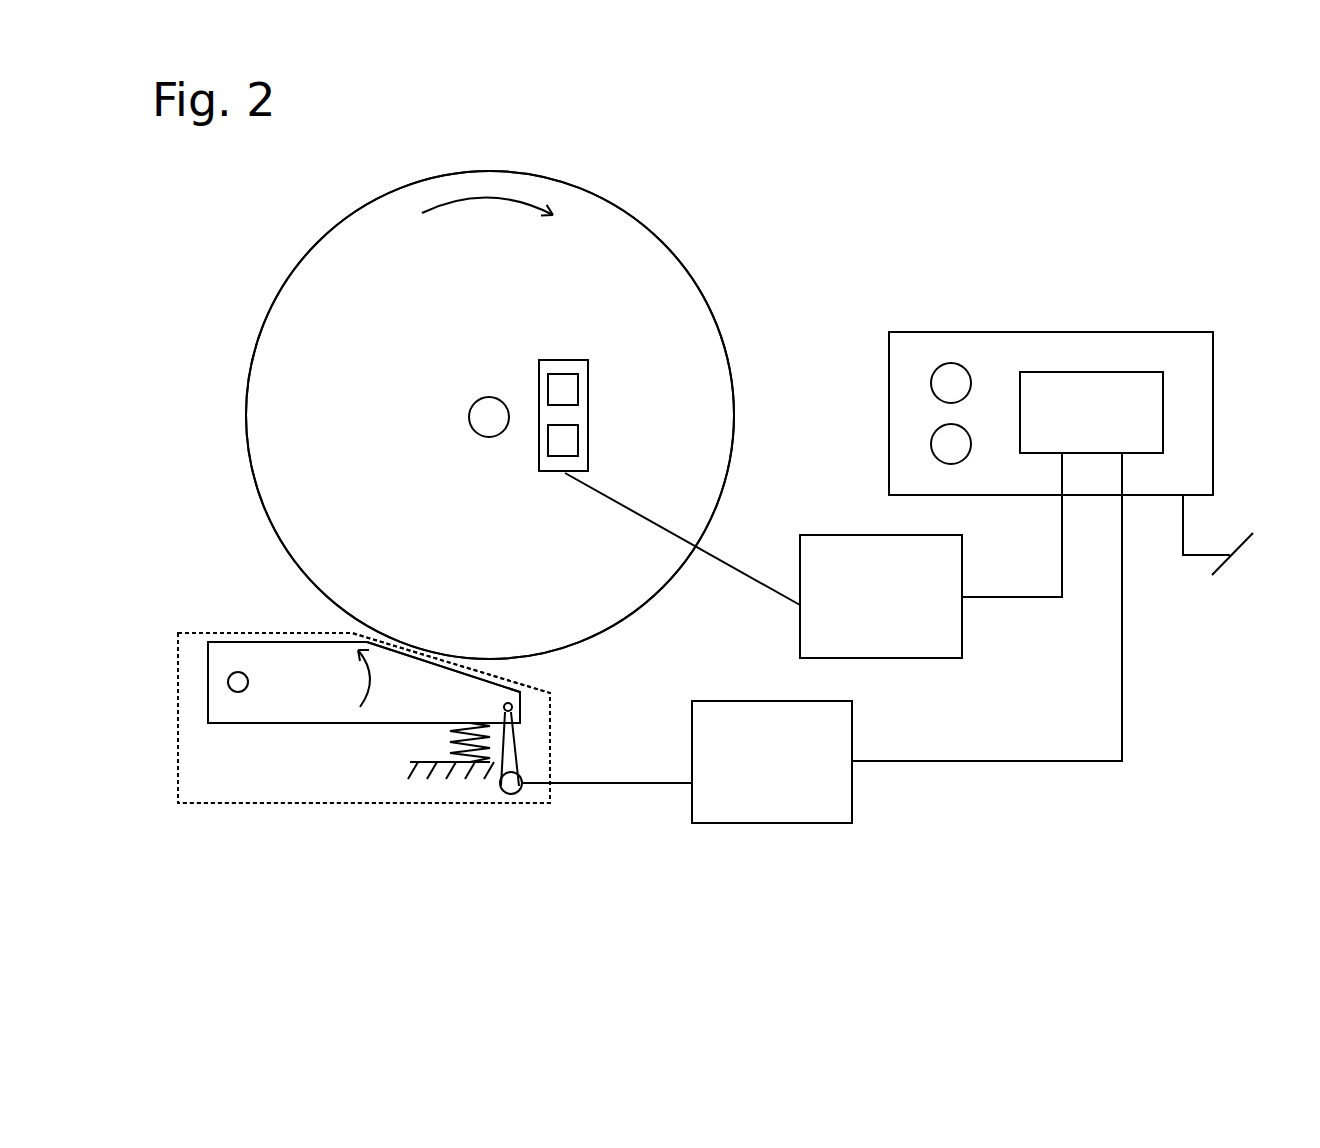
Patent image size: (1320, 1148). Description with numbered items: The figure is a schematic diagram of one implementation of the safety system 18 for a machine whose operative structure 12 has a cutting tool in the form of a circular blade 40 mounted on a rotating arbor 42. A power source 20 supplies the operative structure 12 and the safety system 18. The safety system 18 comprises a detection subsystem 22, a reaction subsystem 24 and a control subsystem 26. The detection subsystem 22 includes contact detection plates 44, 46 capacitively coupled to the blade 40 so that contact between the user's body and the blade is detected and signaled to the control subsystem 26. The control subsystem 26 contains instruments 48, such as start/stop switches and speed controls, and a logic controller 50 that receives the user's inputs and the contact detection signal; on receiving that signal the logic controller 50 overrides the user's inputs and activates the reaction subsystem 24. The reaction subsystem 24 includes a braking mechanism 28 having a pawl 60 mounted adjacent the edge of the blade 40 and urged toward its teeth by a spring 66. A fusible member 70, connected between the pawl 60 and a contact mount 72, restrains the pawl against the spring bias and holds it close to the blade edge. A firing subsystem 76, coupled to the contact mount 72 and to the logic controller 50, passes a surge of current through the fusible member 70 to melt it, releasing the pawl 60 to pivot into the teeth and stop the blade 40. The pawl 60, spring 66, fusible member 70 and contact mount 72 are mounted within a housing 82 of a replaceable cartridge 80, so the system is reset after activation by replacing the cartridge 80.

The operative structure 12 is at (716, 185).
The safety system 18 is at (1036, 223).
The power source 20 is at (1223, 549).
The detection subsystem 22 is at (938, 582).
The reaction subsystem 24 is at (810, 867).
The control subsystem 26 is at (1092, 332).
The braking mechanism 28 is at (256, 753).
The circular blade 40 is at (394, 288).
The arbor 42 is at (472, 421).
The contact detection plate 44 is at (573, 384).
The contact detection plate 46 is at (573, 437).
The instruments 48 is at (938, 385).
The logic controller 50 is at (1138, 422).
The pawl 60 is at (265, 652).
The spring 66 is at (418, 743).
The fusible member 70 is at (520, 760).
The contact mount 72 is at (502, 793).
The firing subsystem 76 is at (828, 745).
The replaceable cartridge 80 is at (212, 845).
The housing 82 is at (278, 805).